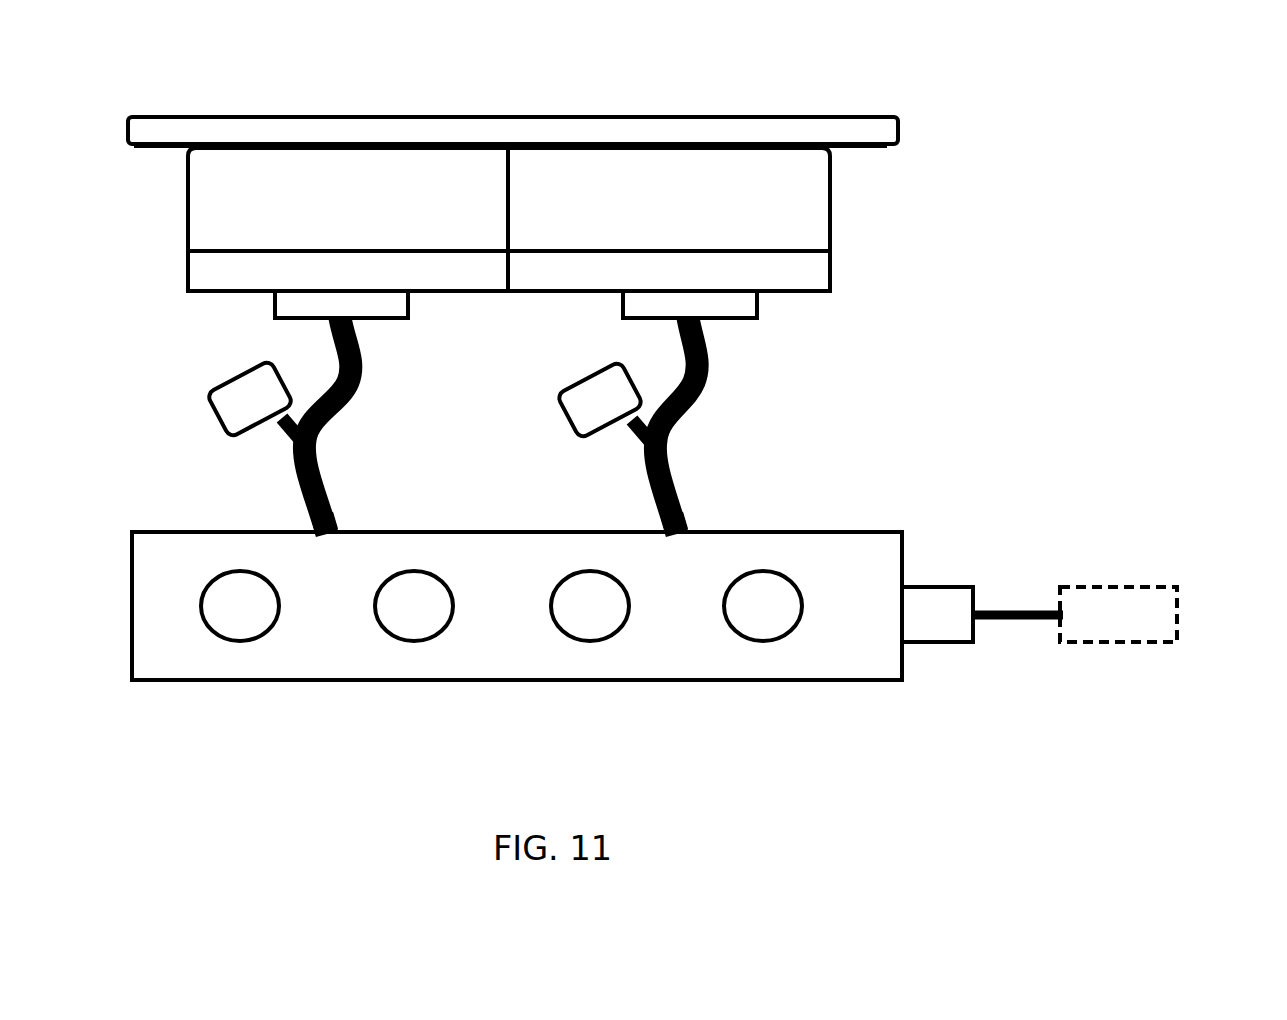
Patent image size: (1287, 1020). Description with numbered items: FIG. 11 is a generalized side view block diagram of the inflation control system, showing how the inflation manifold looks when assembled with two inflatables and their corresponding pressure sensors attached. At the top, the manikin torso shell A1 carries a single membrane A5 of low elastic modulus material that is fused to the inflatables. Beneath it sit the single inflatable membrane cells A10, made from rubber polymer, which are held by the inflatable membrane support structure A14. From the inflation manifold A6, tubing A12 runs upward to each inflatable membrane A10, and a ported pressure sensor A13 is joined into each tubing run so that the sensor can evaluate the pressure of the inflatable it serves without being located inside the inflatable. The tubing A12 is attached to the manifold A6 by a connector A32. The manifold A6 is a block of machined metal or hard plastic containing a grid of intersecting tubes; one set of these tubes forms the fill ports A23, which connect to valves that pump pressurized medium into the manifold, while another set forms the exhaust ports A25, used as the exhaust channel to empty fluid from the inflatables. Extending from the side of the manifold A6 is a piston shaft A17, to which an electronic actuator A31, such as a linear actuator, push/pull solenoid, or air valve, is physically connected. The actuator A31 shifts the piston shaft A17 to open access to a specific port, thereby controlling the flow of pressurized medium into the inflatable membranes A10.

The manikin torso shell A1 is at (513, 101).
The single membrane of low elastic modulus material A5 is at (550, 102).
The single inflatable membrane cell A10 is at (575, 233).
The inflatable membrane support structure A14 is at (600, 254).
The tubing A12 is at (376, 426).
The ported pressure sensor A13 is at (217, 382).
The connector A32 is at (576, 498).
The inflation manifold A6 is at (537, 566).
The exhaust port A25 is at (469, 675).
The fill port A23 is at (642, 675).
The piston shaft A17 is at (984, 565).
The electronic actuator A31 is at (1168, 594).